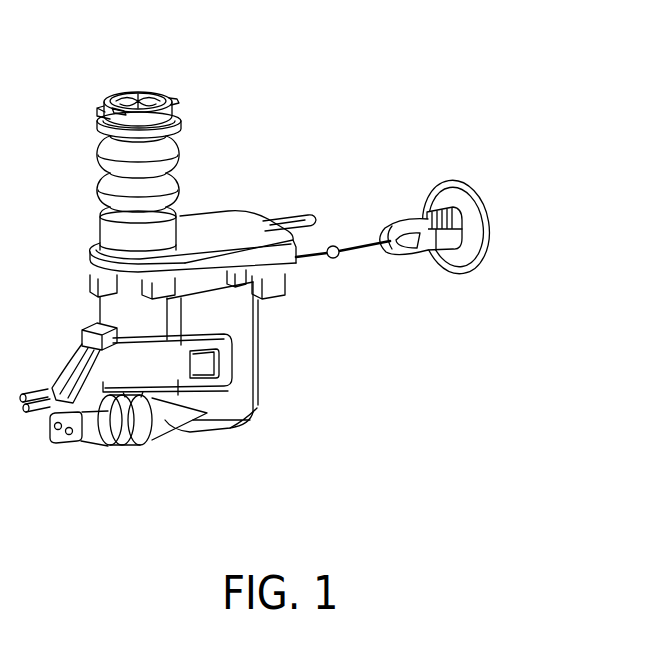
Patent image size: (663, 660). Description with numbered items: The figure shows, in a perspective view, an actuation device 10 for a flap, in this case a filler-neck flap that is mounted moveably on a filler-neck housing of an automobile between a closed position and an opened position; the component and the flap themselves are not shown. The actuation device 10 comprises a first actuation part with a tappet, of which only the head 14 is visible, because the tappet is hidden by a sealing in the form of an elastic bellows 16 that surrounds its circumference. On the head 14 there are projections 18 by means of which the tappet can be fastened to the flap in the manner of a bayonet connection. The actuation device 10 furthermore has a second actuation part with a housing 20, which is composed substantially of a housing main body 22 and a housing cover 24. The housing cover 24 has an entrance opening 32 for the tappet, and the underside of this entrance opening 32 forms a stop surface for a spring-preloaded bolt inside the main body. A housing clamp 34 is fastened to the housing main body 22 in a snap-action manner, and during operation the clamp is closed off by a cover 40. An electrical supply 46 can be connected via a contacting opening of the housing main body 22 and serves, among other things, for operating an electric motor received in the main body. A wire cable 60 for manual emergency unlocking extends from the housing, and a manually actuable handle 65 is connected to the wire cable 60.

The actuation device 10 is at (334, 100).
The head 14 is at (134, 101).
The elastic bellows 16 is at (180, 154).
The projections 18 is at (172, 102).
The housing 20 is at (257, 377).
The housing main body 22 is at (230, 405).
The housing cover 24 is at (236, 221).
The entrance opening 32 is at (92, 255).
The housing clamp 34 is at (187, 367).
The cover 40 is at (78, 365).
The electrical supply 46 is at (95, 430).
The wire cable 60 is at (360, 243).
The manually actuable handle 65 is at (493, 232).